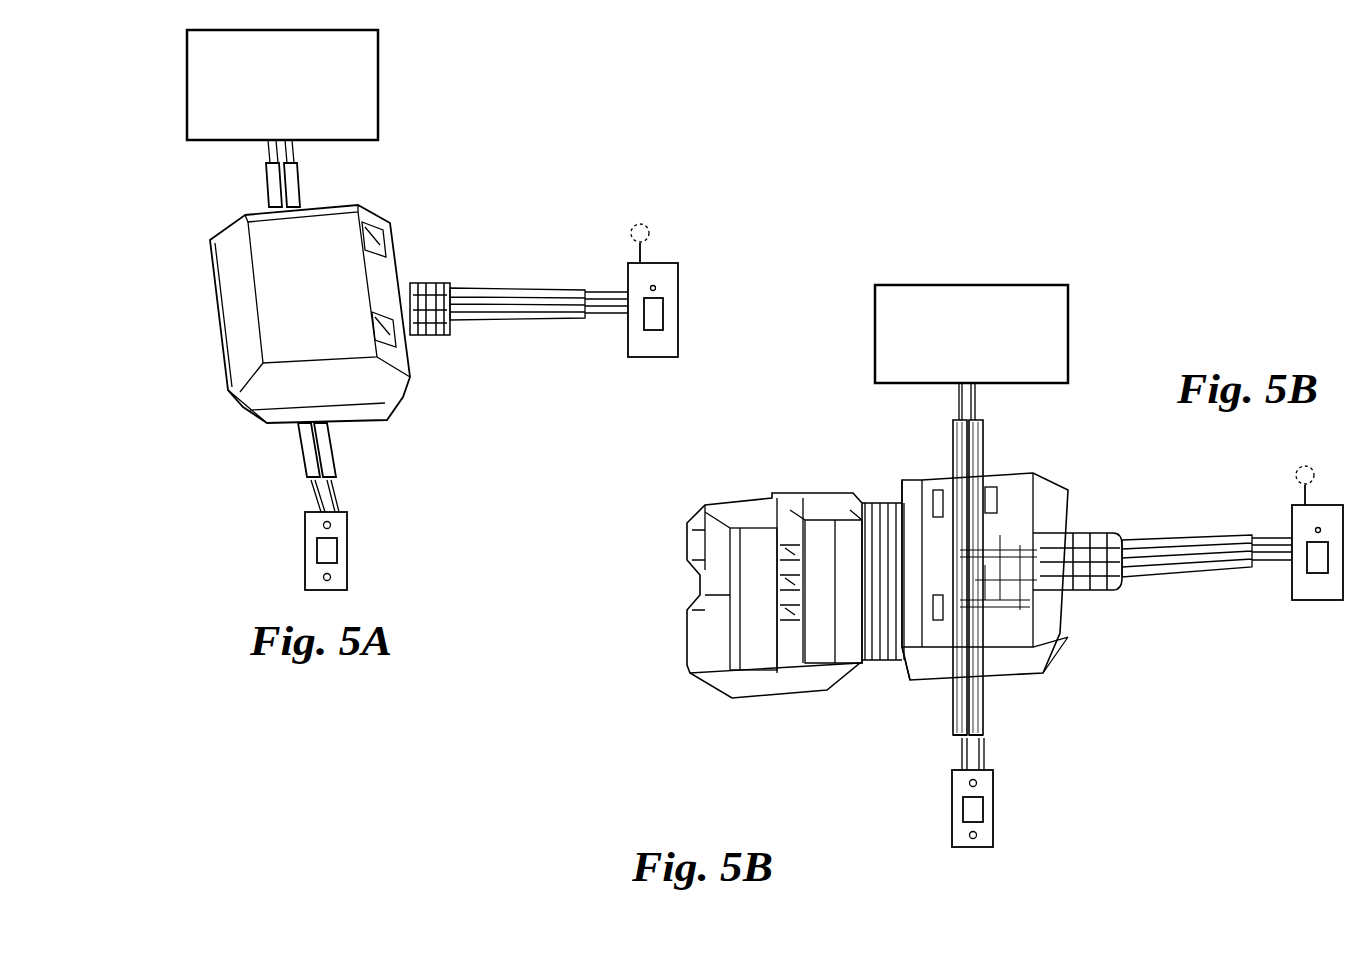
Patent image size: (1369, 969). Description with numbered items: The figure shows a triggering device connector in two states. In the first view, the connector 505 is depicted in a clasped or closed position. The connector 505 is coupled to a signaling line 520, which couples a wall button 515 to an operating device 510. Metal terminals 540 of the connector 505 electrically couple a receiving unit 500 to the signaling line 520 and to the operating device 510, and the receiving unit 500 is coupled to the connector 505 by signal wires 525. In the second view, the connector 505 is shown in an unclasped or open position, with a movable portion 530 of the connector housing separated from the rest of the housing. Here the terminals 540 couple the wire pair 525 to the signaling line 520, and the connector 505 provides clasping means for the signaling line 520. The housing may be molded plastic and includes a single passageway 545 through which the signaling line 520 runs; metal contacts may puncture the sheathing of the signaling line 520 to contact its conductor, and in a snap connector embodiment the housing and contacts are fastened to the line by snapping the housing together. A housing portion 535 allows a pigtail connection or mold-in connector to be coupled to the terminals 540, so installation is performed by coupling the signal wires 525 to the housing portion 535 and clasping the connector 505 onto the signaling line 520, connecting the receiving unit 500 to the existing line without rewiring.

In FIG. 5A, the receiving unit 500 is at (678, 295).
In FIG. 5B, the receiving unit 500 is at (1318, 600).
In FIG. 5A, the connector 505 is at (395, 238).
In FIG. 5B, the connector 505 is at (1048, 673).
In FIG. 5A, the operating device 510 is at (378, 80).
In FIG. 5B, the operating device 510 is at (1068, 303).
In FIG. 5A, the wall button 515 is at (305, 543).
In FIG. 5B, the wall button 515 is at (953, 822).
In FIG. 5A, the signaling line 520 is at (328, 450).
In FIG. 5B, the signaling line 520 is at (982, 703).
In FIG. 5A, the signal wires 525 is at (497, 298).
In FIG. 5B, the signal wires 525 is at (1210, 538).
In FIG. 5B, the movable portion 530 is at (765, 697).
In FIG. 5B, the housing portion 535 is at (1100, 585).
In FIG. 5B, the metal terminals 540 is at (1102, 493).
In FIG. 5B, the passageway 545 is at (997, 465).